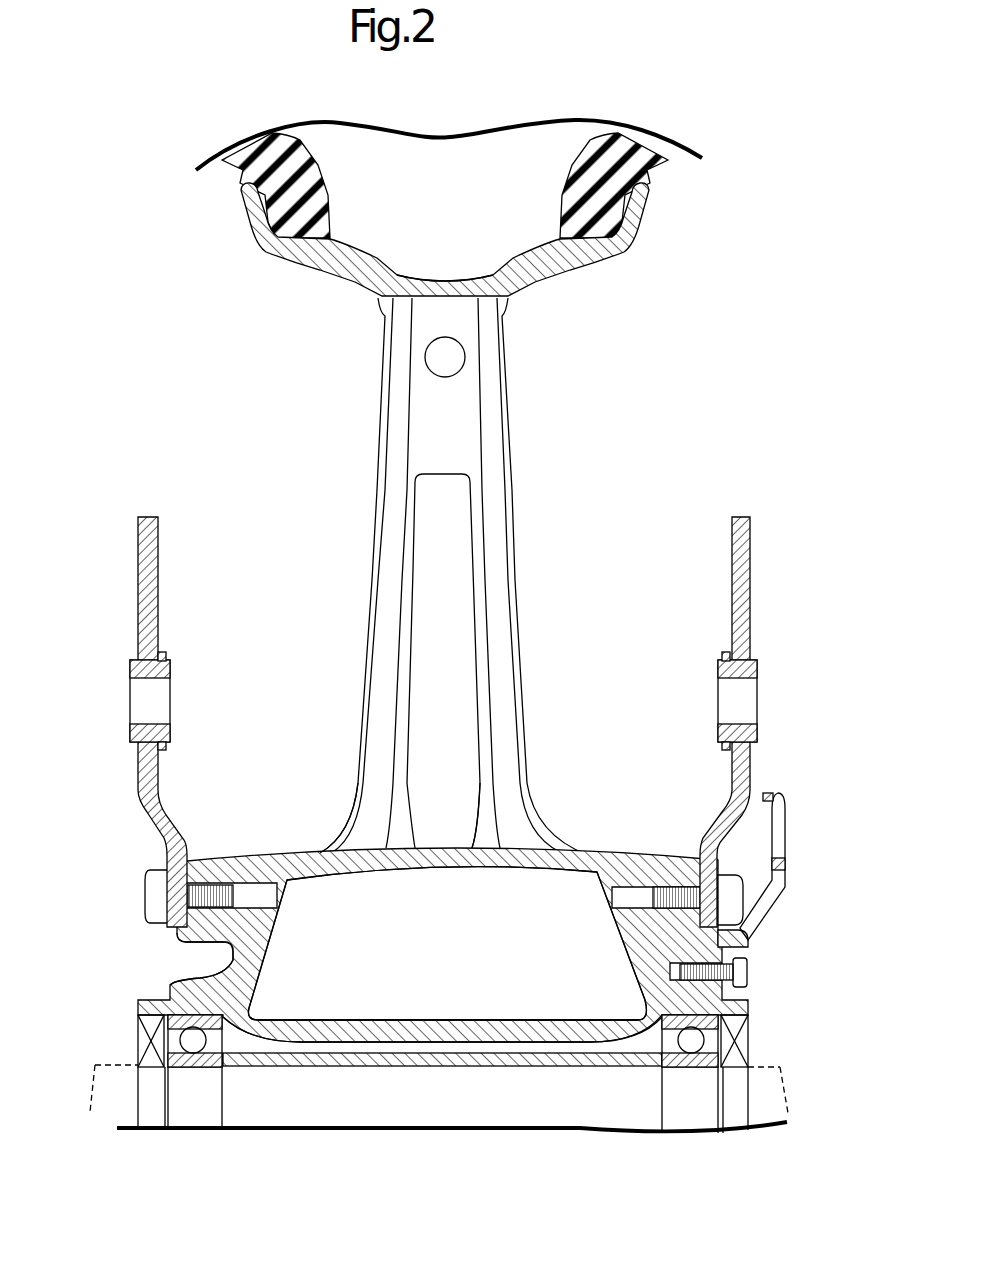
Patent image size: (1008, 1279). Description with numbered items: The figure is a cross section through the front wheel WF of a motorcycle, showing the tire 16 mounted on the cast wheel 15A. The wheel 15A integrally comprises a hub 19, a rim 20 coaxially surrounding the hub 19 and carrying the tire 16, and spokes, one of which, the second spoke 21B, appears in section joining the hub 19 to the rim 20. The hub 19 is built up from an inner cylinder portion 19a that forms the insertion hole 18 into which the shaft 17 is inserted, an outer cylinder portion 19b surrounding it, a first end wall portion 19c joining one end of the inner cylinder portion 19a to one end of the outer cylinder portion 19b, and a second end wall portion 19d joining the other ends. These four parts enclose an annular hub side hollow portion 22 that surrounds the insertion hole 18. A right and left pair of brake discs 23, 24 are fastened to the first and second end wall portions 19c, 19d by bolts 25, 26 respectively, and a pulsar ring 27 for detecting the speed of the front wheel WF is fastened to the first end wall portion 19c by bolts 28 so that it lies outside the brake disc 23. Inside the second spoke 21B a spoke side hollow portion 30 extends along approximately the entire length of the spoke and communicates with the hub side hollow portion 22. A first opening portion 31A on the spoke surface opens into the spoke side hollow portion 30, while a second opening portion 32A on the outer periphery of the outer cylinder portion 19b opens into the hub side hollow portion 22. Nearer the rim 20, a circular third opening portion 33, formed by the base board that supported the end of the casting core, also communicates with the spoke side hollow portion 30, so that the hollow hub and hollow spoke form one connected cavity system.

The front wheel WF is at (225, 210).
The tire 16 is at (243, 152).
The wheel 15A is at (662, 213).
The rim 20 is at (550, 262).
The second spoke 21B is at (492, 417).
The spoke side hollow portion 30 is at (466, 714).
The first opening portion 31A is at (475, 632).
The second opening portion 32A is at (448, 850).
The third opening portion 33 is at (437, 358).
The hub 19 is at (616, 853).
The inner cylinder portion 19a is at (530, 1025).
The outer cylinder portion 19b is at (345, 852).
The first end wall portion 19c is at (743, 948).
The second end wall portion 19d is at (233, 960).
The hub side hollow portion 22 is at (483, 914).
The insertion hole 18 is at (343, 1040).
The shaft 17 is at (127, 1062).
The brake disc 24 is at (150, 607).
The brake disc 23 is at (746, 587).
The bolt 26 is at (160, 893).
The bolt 25 is at (735, 882).
The bolt 28 is at (747, 973).
The pulsar ring 27 is at (782, 795).